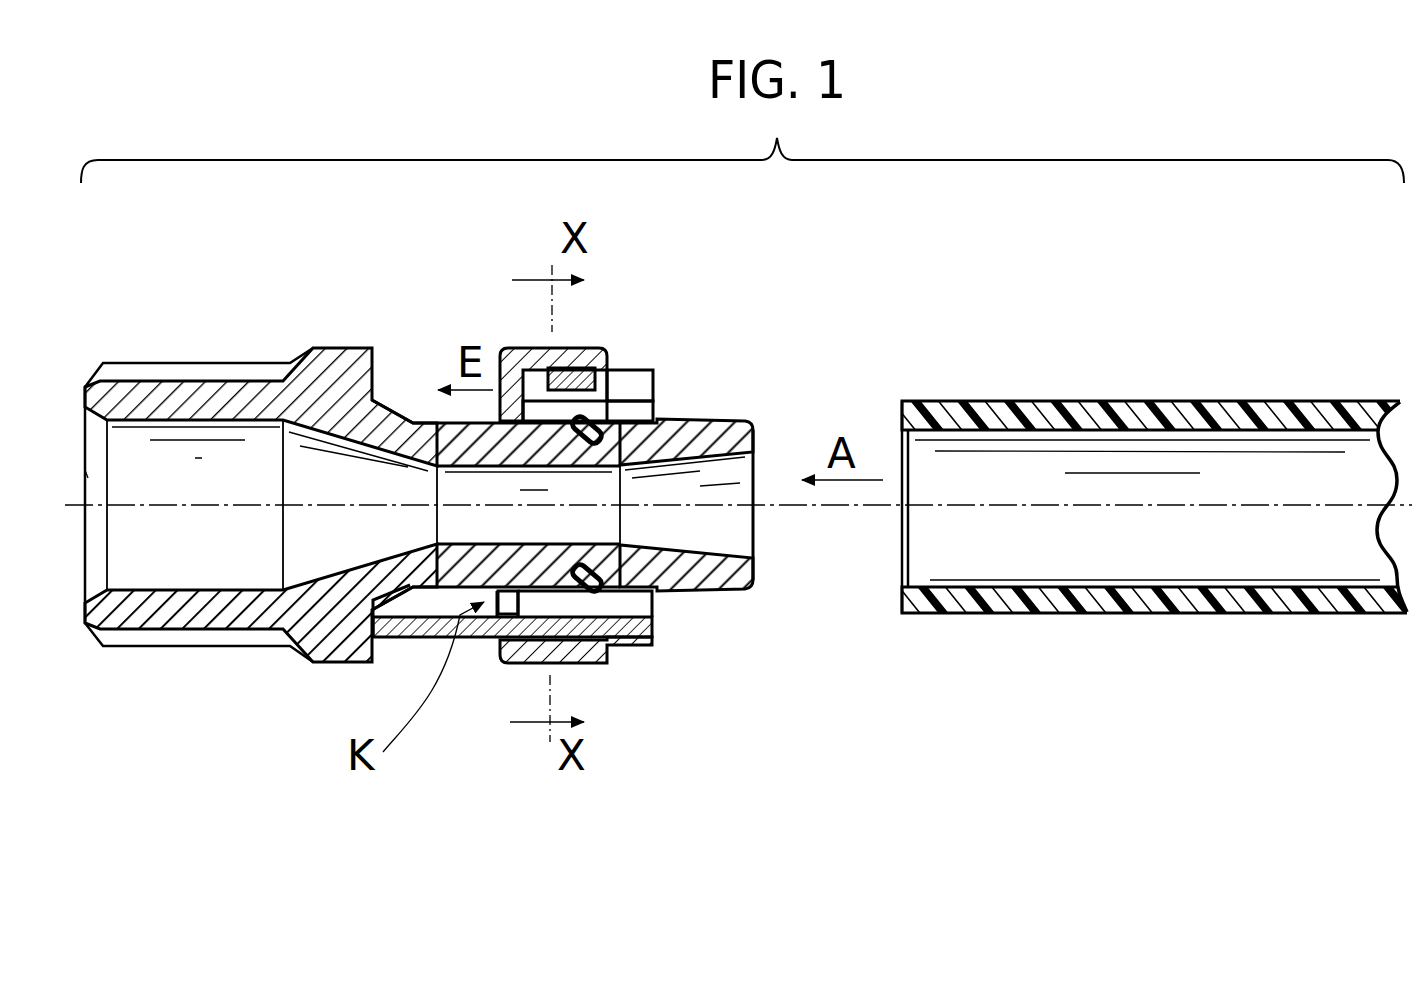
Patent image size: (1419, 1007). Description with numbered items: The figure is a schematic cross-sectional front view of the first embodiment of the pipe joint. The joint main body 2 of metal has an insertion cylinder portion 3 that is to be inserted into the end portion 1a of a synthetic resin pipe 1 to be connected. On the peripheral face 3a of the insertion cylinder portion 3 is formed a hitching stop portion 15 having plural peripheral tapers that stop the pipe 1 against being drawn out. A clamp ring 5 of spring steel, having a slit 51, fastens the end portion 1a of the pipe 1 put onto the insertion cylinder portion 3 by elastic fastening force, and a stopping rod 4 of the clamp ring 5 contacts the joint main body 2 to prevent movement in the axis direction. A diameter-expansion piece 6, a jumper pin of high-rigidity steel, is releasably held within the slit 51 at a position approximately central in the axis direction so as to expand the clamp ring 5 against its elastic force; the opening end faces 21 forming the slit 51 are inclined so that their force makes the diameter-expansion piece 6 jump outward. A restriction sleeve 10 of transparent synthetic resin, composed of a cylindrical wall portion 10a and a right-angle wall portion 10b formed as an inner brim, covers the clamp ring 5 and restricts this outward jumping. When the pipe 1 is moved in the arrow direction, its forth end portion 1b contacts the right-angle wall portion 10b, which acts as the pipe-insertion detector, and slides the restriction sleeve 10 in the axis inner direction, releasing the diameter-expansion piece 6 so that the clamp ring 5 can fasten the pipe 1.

The pipe 1 is at (1143, 457).
The end portion of pipe 1a is at (1030, 414).
The forth end portion of pipe 1b is at (943, 412).
The joint main body 2 is at (350, 330).
The insertion cylinder portion 3 is at (727, 426).
The peripheral face of insertion cylinder portion 3a is at (674, 418).
The stopping rod 4 is at (430, 638).
The clamp ring 5 is at (637, 650).
The diameter-expansion piece 6 is at (576, 364).
The restriction sleeve 10 is at (536, 357).
The cylindrical wall portion 10a is at (583, 667).
The right-angle wall portion 10b is at (473, 634).
The hitching stop portion 15 is at (622, 418).
The opening end face 21 is at (650, 372).
The slit 51 is at (640, 376).